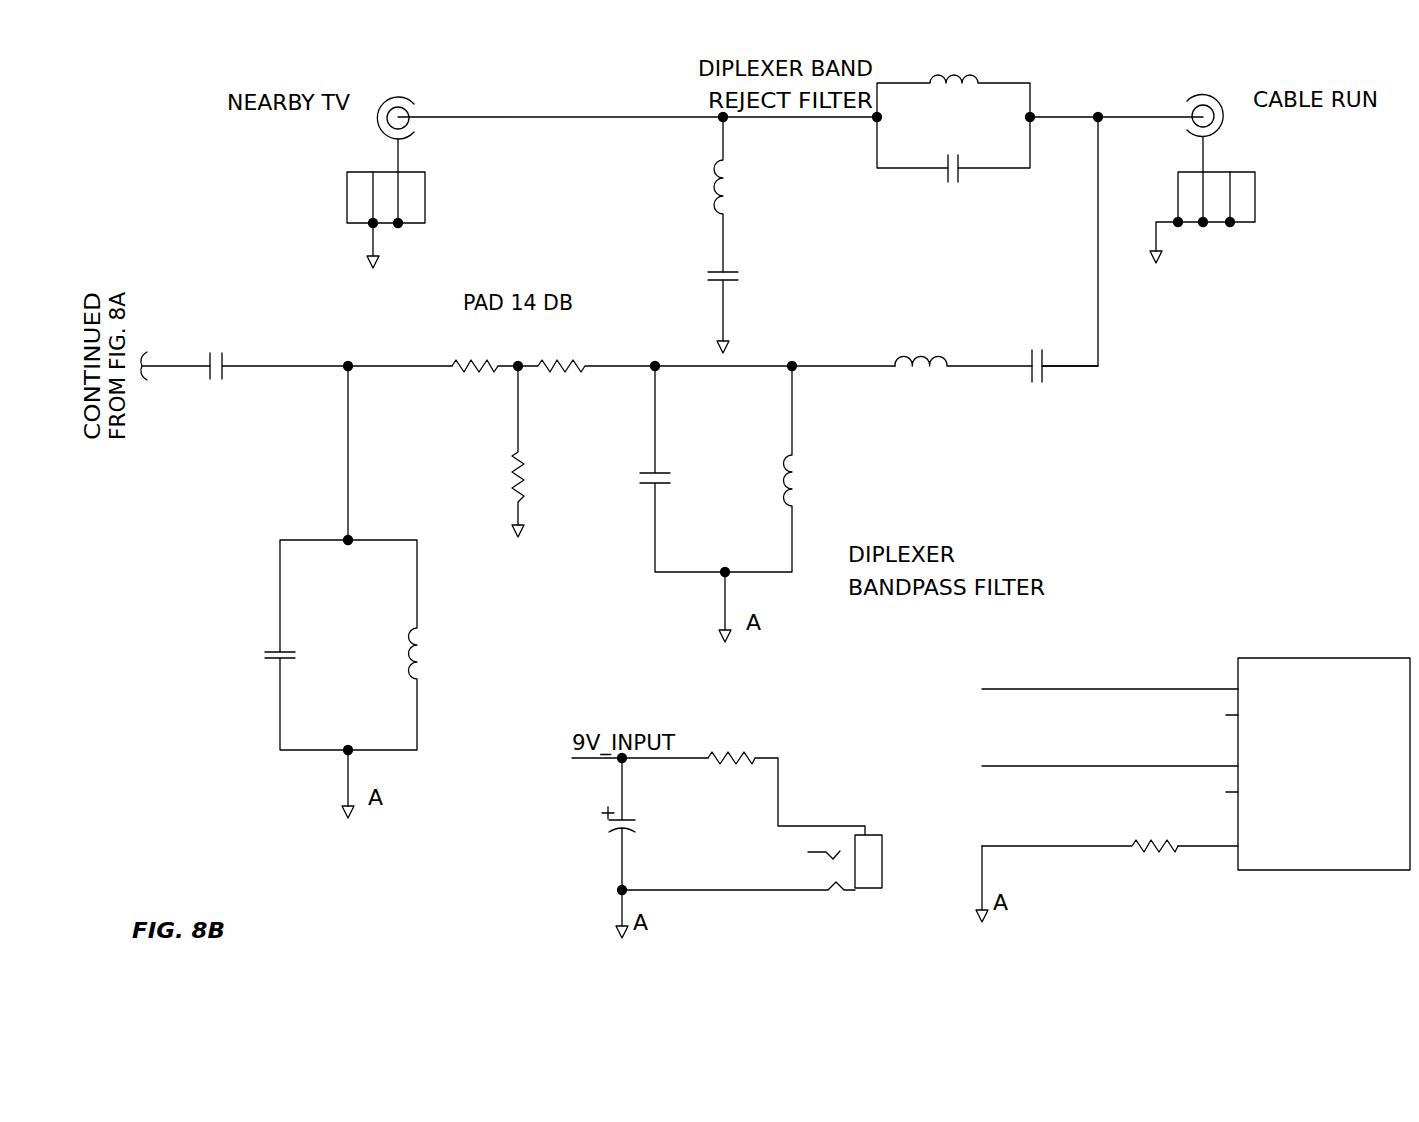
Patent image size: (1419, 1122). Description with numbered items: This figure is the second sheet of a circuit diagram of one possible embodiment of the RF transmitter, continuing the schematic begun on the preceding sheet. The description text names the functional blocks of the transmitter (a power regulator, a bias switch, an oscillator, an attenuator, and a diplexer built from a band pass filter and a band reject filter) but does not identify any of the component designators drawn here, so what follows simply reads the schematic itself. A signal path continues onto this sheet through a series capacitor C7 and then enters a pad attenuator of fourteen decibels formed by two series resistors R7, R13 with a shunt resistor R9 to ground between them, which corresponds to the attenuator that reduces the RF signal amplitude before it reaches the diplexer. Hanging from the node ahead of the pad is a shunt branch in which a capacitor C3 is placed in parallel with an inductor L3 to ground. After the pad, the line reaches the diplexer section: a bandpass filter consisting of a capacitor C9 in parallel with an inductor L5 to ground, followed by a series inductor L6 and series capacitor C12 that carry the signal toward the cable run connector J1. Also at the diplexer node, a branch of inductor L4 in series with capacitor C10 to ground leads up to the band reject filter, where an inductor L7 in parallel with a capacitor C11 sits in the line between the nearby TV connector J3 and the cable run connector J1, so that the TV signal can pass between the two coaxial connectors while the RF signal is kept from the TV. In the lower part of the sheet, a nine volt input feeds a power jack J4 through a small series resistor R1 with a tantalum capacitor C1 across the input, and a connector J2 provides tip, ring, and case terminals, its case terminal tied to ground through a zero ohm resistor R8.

The nearby TV coaxial connector J3 is at (382, 166).
The cable run coaxial connector J1 is at (1203, 162).
The inductor 10 nH (band reject filter) L7 is at (953, 84).
The capacitor 15 pF (band reject filter) C11 is at (953, 193).
The inductor 100 nH L4 is at (721, 194).
The capacitor 1.2 pF C10 is at (746, 288).
The capacitor 7 pF C7 is at (258, 395).
The resistor 49.9 ohm (pad) R7 is at (479, 377).
The resistor 49.9 ohm (pad) R13 is at (586, 377).
The resistor 30.1 ohm (pad) R9 is at (552, 451).
The capacitor 15 pF (bandpass filter) C9 is at (681, 469).
The inductor 10 nH (bandpass filter) L5 is at (777, 469).
The inductor 120 nH L6 is at (958, 363).
The capacitor 1.2 pF C12 is at (1044, 388).
The capacitor 7 pF C3 is at (305, 645).
The inductor 10 nH L3 is at (400, 645).
The resistor 5.1 ohm R1 is at (785, 777).
The tantalum capacitor 10 uF C1 is at (644, 824).
The power jack PJ-002A J4 is at (752, 856).
The connector 35RAPC2BV4 J2 is at (1196, 768).
The resistor 0 ohm R8 is at (1080, 861).